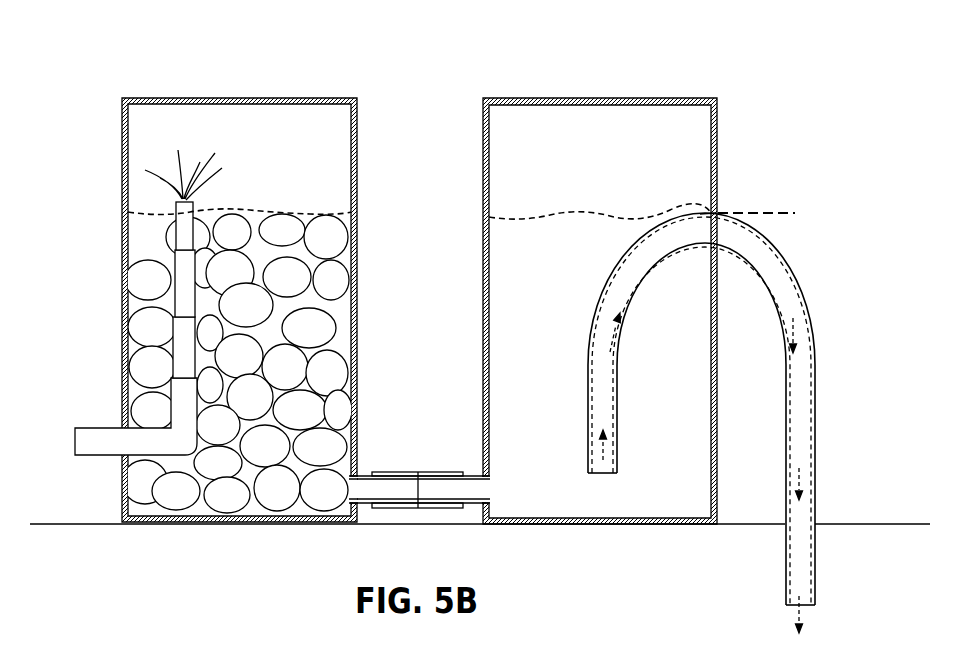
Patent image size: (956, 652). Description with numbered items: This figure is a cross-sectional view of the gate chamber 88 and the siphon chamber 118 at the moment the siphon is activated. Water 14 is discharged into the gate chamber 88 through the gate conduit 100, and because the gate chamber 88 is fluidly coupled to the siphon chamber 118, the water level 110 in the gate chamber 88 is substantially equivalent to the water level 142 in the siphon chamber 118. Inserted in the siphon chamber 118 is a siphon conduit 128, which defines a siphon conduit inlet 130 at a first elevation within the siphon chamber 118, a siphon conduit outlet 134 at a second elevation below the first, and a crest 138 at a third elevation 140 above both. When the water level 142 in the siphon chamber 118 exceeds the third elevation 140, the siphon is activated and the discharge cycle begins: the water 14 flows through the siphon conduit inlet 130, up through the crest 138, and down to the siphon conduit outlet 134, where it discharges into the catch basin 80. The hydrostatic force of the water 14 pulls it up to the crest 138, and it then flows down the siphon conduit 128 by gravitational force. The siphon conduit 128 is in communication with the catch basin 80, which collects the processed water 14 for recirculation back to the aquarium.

The gate chamber 88 is at (309, 76).
The siphon chamber 118 is at (651, 76).
The water level 110 is at (366, 205).
The water level 142 is at (474, 205).
The crest 138 is at (725, 200).
The third elevation 140 is at (815, 212).
The gate conduit 100 is at (176, 253).
The siphon conduit 128 is at (812, 392).
The siphon conduit inlet 130 is at (603, 474).
The siphon conduit outlet 134 is at (808, 606).
The water 14 is at (678, 477).
The catch basin 80 is at (728, 582).